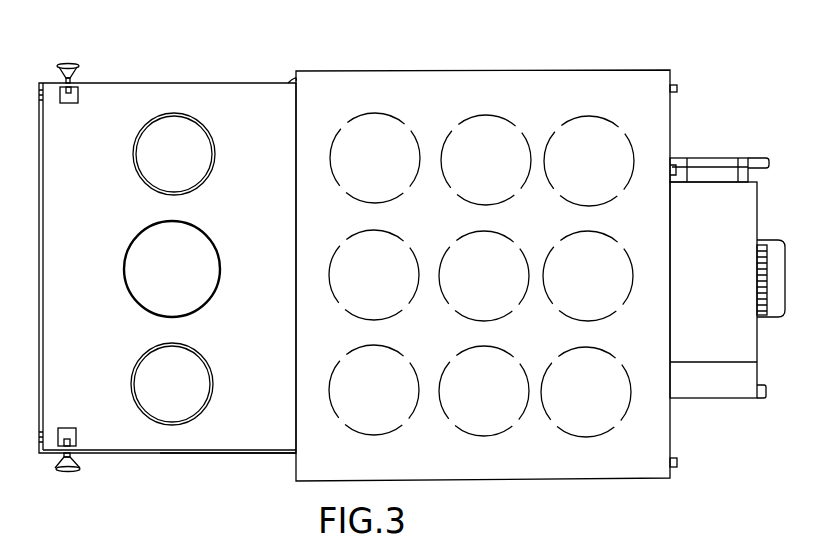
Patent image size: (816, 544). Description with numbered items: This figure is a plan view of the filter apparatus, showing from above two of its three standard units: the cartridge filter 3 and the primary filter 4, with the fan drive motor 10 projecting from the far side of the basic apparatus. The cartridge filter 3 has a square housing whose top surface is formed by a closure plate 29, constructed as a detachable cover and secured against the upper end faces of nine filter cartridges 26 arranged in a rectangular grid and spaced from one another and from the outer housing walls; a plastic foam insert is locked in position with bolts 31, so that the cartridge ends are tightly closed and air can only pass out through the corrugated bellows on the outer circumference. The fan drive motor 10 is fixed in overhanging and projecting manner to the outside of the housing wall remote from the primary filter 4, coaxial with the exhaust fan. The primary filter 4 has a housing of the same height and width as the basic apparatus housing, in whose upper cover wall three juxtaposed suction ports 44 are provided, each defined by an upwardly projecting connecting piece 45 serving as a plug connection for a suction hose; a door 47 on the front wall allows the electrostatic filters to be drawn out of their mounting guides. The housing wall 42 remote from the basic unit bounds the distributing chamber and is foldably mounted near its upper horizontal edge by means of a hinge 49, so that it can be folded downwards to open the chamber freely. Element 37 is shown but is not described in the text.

The cartridge filter 3 is at (507, 60).
The primary filter 4 is at (173, 56).
The fan drive motor 10 is at (757, 272).
The filter cartridge 26 is at (461, 131).
The closure plate 29 is at (667, 126).
The bolts 31 is at (293, 78).
The bottom edge 37 is at (212, 452).
The housing wall 42 is at (44, 304).
The suction port 44 is at (202, 172).
The connecting piece 45 is at (208, 362).
The door 47 is at (75, 104).
The hinge 49 is at (44, 429).